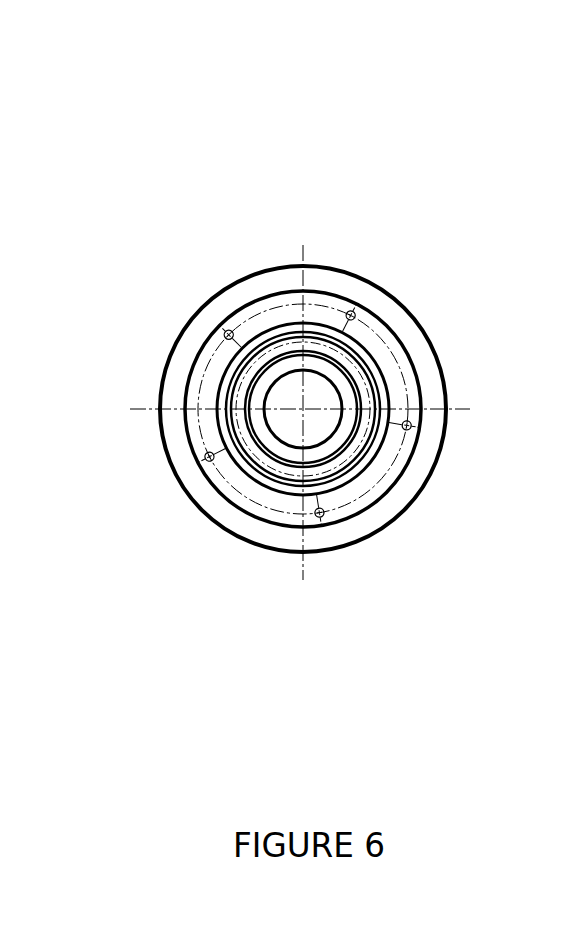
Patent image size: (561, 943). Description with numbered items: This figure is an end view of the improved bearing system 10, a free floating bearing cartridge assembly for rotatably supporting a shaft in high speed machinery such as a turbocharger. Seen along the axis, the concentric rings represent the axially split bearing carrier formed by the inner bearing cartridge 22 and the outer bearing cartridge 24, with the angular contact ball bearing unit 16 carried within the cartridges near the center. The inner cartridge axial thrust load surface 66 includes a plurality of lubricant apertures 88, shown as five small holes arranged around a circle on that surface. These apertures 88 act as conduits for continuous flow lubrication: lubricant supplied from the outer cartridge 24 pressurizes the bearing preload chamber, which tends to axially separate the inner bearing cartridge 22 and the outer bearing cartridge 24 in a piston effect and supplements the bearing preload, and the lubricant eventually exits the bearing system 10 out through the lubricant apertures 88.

The improved bearing system 10 is at (313, 343).
The angular contact ball bearing unit 16 is at (232, 460).
The inner bearing cartridge 22 is at (257, 520).
The outer bearing cartridge 24 is at (233, 277).
The inner cartridge axial thrust load surface 66 is at (380, 348).
The lubricant apertures 88 is at (222, 330).